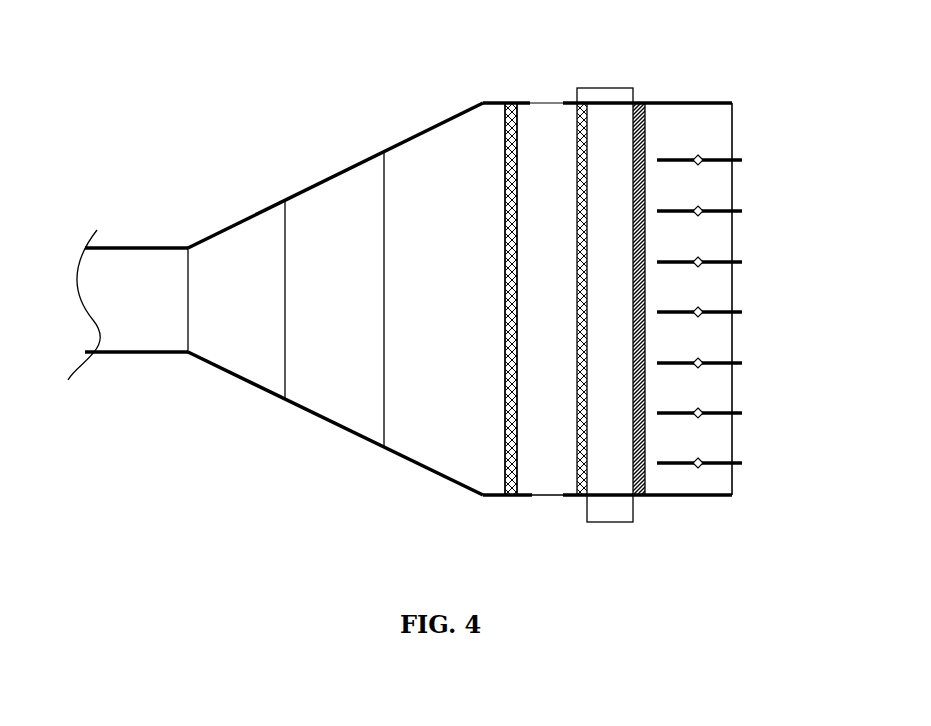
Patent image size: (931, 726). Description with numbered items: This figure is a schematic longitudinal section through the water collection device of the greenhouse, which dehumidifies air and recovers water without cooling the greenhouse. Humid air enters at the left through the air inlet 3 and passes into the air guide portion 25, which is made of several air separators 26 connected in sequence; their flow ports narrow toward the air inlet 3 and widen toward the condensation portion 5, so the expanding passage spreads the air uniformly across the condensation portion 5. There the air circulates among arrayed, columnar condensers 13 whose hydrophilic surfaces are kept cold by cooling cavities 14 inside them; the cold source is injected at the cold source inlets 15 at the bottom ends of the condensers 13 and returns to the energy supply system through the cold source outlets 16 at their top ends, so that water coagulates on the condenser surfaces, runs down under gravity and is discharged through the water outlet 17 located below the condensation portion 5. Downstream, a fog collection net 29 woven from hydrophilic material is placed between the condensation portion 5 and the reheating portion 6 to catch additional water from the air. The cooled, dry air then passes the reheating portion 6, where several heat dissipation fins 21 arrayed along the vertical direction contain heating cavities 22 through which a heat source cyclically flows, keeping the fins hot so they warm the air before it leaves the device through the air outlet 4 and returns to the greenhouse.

The air inlet 3 is at (115, 335).
The air guide portion 25 is at (312, 153).
The air separators 26 is at (333, 398).
The condensation portion 5 is at (486, 424).
The air outlet 4 is at (715, 488).
The cold source inlets 15 is at (543, 495).
The condensers 13 is at (508, 167).
The cooling cavities 14 is at (528, 140).
The cold source outlets 16 is at (547, 108).
The water outlet 17 is at (623, 515).
The fog collection net 29 is at (647, 263).
The heat dissipation fins 21 is at (737, 162).
The heating cavities 22 is at (700, 213).
The reheating portion 6 is at (716, 384).